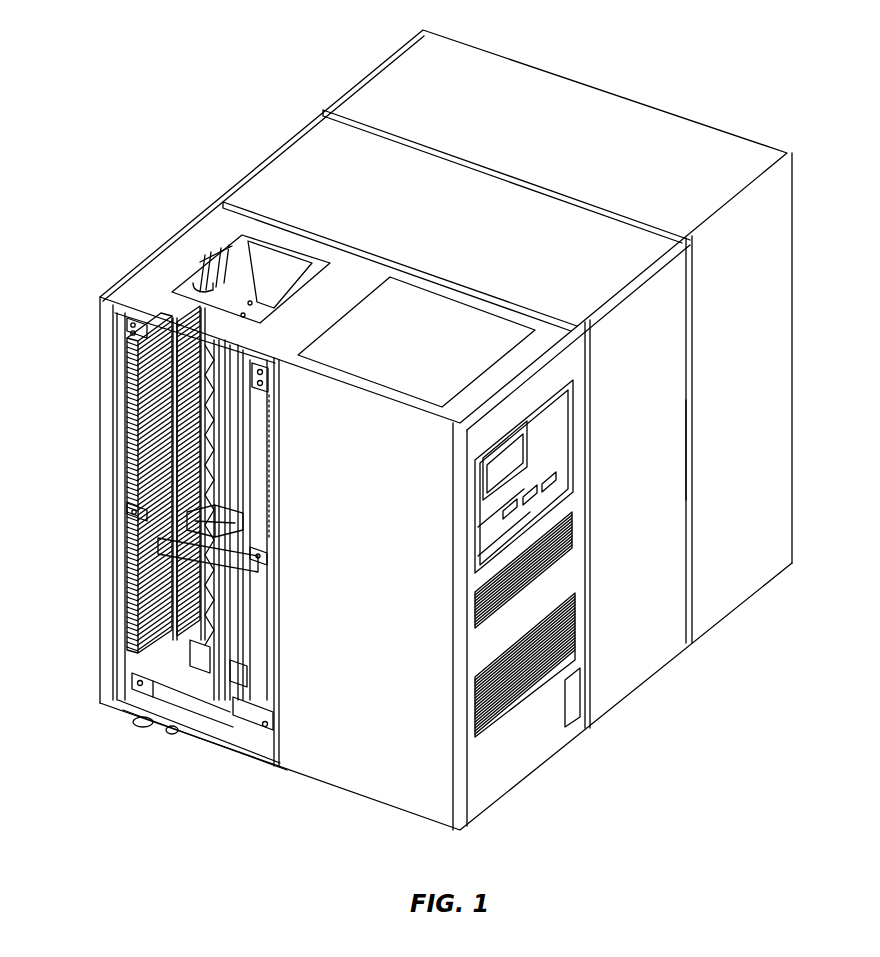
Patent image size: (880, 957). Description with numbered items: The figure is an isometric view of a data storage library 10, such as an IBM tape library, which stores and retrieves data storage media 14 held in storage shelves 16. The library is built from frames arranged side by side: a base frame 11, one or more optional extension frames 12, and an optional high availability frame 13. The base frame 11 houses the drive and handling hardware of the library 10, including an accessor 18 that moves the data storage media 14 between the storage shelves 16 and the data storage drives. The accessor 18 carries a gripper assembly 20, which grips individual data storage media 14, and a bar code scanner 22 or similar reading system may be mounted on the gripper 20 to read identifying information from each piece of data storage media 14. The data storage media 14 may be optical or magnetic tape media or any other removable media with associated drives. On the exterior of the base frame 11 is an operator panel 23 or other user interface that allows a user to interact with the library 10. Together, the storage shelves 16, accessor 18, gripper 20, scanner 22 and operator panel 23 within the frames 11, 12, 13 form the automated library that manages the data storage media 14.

The data storage library 10 is at (220, 72).
The base frame 11 is at (530, 757).
The extension frame 12 is at (632, 677).
The high availability frame 13 is at (607, 117).
The data storage media 14 is at (143, 353).
The storage shelves 16 is at (108, 478).
The accessor 18 is at (180, 692).
The gripper assembly 20 is at (247, 556).
The bar code scanner 22 is at (240, 512).
The operator panel 23 is at (527, 482).